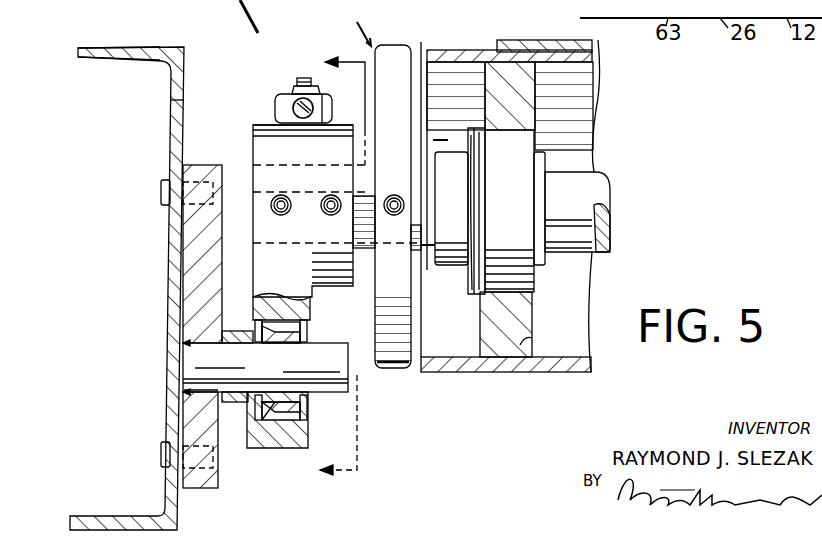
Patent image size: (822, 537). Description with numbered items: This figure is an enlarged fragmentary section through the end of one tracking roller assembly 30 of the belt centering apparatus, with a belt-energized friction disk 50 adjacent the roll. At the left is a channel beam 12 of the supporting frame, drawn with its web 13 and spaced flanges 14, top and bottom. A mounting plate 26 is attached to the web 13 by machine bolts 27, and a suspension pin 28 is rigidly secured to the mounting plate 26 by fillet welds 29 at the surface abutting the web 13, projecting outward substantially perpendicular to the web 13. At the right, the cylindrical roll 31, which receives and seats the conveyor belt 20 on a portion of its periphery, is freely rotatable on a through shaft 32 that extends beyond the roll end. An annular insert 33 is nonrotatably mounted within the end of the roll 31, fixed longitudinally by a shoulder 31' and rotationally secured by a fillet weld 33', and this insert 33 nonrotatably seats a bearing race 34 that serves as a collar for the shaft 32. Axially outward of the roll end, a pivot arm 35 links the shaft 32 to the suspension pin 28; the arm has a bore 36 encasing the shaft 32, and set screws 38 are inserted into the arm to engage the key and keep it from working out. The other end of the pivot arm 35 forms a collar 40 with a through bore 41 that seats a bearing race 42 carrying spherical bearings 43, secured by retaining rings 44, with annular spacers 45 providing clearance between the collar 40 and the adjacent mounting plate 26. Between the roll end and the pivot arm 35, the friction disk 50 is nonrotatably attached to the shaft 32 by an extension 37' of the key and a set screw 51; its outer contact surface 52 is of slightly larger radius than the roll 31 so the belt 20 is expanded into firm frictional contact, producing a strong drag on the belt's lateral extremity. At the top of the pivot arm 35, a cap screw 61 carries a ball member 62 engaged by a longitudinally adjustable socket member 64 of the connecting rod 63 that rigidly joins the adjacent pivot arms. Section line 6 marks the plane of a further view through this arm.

The channel beam 12 is at (137, 47).
The web 13 is at (176, 104).
The flange 14 is at (85, 46).
The conveyor belt 20 is at (590, 45).
The mounting plate 26 is at (188, 168).
The machine bolt 27 is at (170, 188).
The suspension pin 28 is at (350, 366).
The fillet weld 29 is at (183, 343).
The tracking roller assembly 30 is at (358, 23).
The roll 31 is at (506, 220).
The shoulder 31' is at (549, 331).
The through shaft 32 is at (598, 170).
The annular insert 33 is at (504, 70).
The fillet weld 33' is at (495, 341).
The bearing race 34 is at (520, 188).
The pivot arm 35 is at (264, 272).
The bore 36 is at (252, 175).
The key extension 37' is at (368, 210).
The set screw 38 is at (331, 215).
The collar 40 is at (278, 448).
The through bore 41 is at (298, 420).
The bearing race 42 is at (266, 415).
The spherical bearing 43 is at (300, 398).
The retaining ring 44 is at (258, 325).
The annular spacer 45 is at (205, 410).
The friction disk 50 is at (430, 50).
The set screw 51 is at (396, 205).
The outer contact surface 52 is at (376, 45).
The section line 6— 6 is at (342, 264).
The cap screw 61 is at (300, 78).
The ball member 62 is at (292, 92).
The connecting rod 63 is at (313, 108).
The socket member 64 is at (276, 109).